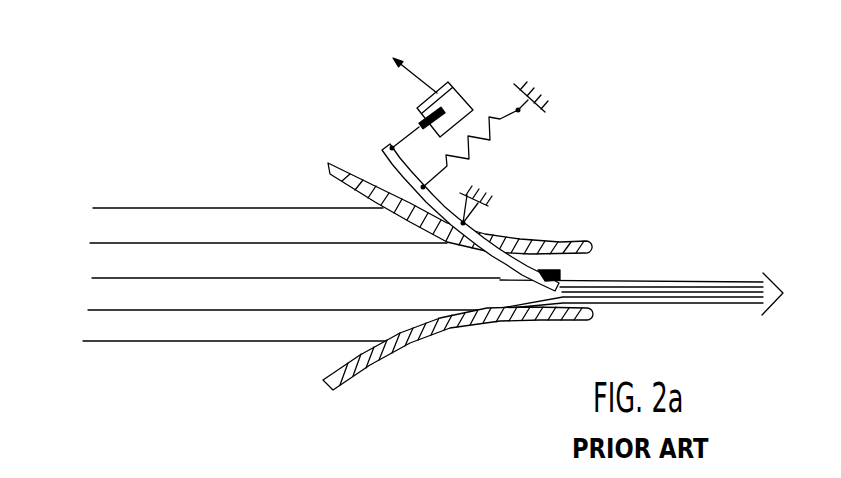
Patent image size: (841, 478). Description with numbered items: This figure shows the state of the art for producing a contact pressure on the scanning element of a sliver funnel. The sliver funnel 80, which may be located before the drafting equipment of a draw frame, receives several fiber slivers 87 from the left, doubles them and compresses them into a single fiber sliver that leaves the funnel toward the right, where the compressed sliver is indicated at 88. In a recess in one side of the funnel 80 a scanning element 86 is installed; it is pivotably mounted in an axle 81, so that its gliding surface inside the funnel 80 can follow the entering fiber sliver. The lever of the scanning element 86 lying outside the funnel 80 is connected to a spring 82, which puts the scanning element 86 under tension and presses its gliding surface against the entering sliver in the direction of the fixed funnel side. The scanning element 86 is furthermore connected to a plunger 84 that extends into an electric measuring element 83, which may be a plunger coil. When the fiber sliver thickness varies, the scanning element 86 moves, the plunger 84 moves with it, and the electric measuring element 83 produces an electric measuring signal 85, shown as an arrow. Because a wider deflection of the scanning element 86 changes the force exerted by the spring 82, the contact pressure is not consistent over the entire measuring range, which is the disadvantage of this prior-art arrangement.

The sliver funnel 80 is at (538, 238).
The axle 81 is at (466, 222).
The spring 82 is at (483, 141).
The electric measuring element 83 is at (443, 83).
The plunger 84 is at (418, 123).
The electric measuring signal 85 is at (405, 61).
The scanning element 86 is at (556, 273).
The fiber slivers 87 is at (83, 341).
The outgoing sheet stack 88 is at (715, 282).